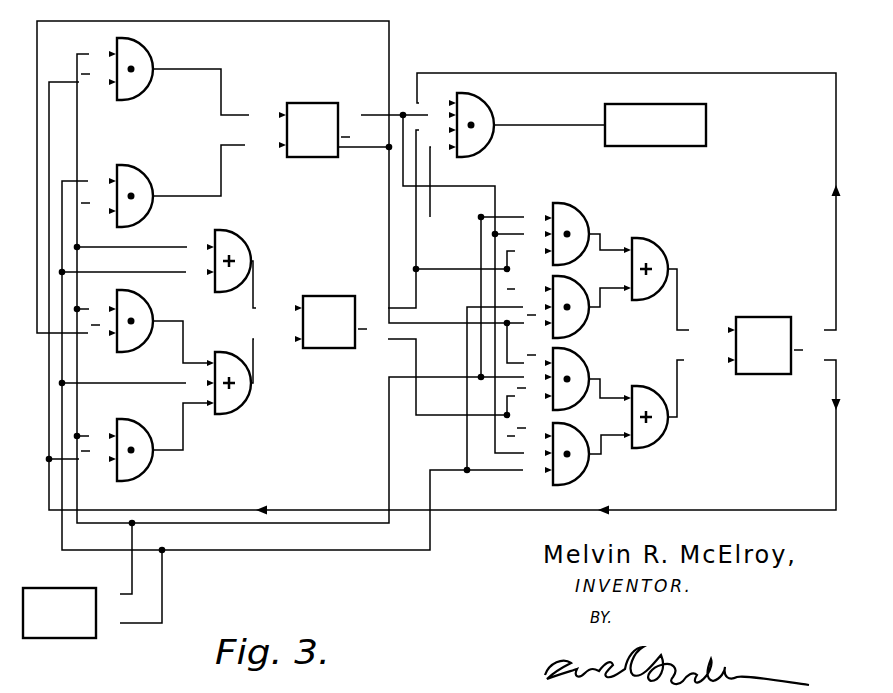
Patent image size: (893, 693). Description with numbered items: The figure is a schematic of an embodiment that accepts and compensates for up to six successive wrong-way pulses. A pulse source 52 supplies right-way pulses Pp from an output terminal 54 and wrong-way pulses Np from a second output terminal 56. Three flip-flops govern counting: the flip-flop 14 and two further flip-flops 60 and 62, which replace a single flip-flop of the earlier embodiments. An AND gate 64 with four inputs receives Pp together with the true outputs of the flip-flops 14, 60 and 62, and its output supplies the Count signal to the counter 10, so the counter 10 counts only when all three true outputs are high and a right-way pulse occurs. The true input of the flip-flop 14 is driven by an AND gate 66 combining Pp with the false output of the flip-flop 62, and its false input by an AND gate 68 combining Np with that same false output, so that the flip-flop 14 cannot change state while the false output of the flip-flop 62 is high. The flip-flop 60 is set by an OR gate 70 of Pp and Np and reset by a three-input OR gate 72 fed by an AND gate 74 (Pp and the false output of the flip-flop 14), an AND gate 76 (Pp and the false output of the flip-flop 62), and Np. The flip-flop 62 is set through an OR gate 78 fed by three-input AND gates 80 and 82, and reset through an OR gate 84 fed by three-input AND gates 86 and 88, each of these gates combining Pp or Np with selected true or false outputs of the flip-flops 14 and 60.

The counter 10 is at (700, 146).
The flip-flop 14 is at (328, 108).
The pulse source 52 is at (37, 588).
The output terminal 54 is at (97, 593).
The second output terminal 56 is at (97, 630).
The flip-flop 60 is at (344, 297).
The flip-flop 62 is at (773, 375).
The AND gate 64 is at (486, 109).
The AND gate 66 is at (149, 58).
The AND gate 68 is at (148, 184).
The OR gate 70 is at (244, 250).
The OR gate 72 is at (238, 401).
The AND gate 74 is at (143, 313).
The AND gate 76 is at (140, 465).
The OR gate 78 is at (662, 256).
The AND gate 80 is at (572, 214).
The AND gate 82 is at (578, 318).
The OR gate 84 is at (657, 437).
The AND gate 86 is at (582, 373).
The AND gate 88 is at (579, 468).